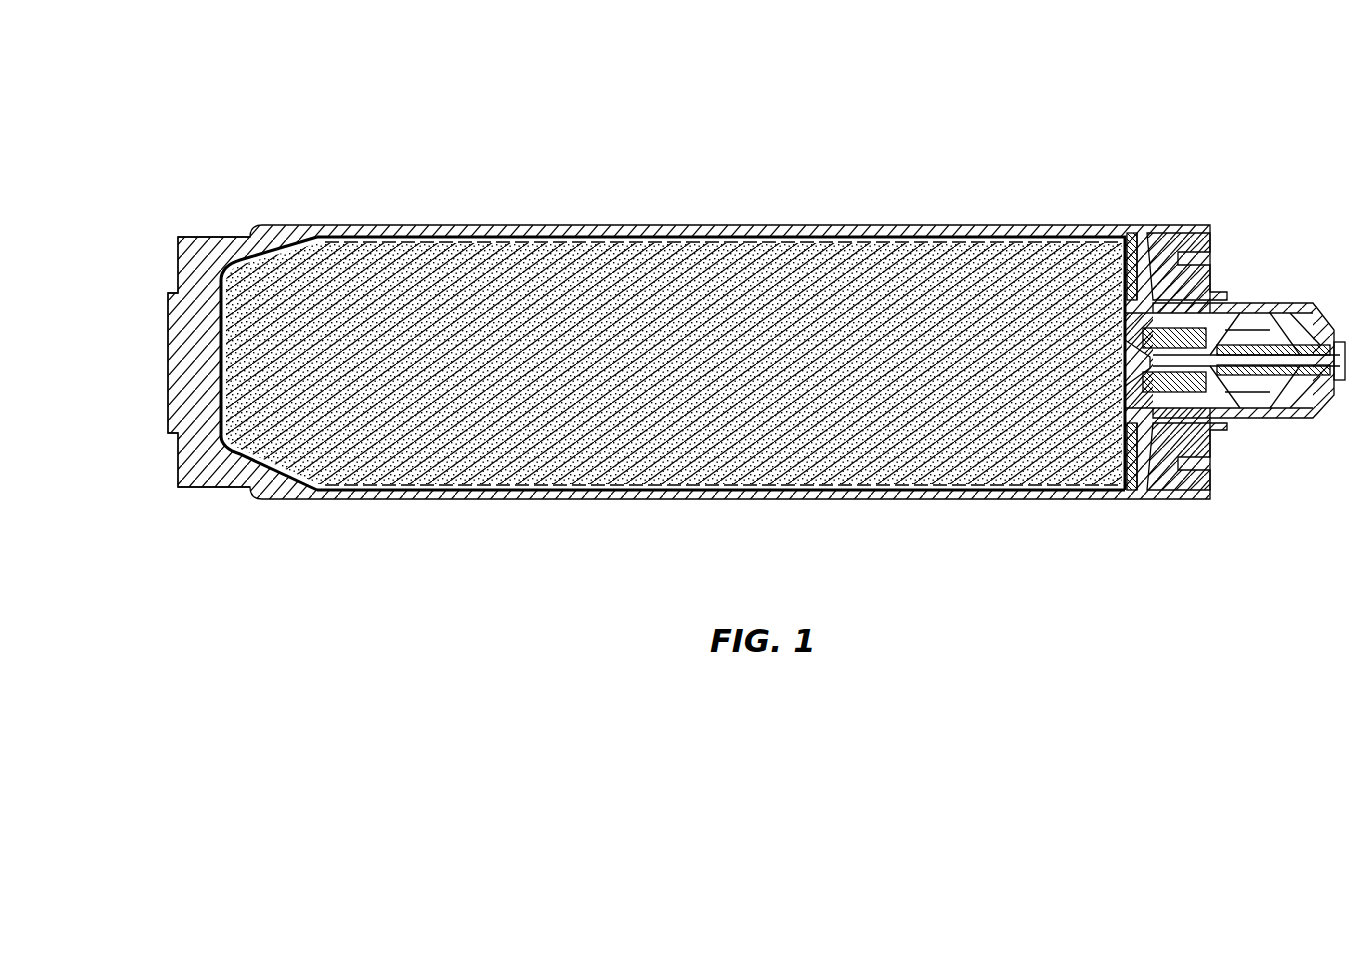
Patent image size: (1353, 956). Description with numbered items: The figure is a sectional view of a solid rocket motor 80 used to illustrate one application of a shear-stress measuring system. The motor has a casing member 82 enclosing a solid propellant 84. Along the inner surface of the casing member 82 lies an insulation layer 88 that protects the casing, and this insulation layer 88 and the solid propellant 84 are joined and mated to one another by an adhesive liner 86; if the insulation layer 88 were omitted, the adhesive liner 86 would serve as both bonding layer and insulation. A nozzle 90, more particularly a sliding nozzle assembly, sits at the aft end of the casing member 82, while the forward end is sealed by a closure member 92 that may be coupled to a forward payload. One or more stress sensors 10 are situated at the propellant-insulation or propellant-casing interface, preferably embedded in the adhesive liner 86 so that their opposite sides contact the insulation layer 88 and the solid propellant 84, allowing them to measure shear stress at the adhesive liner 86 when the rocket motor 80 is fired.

The solid rocket motor 80 is at (314, 146).
The stress sensor 10 is at (492, 226).
The casing member 82 is at (757, 225).
The solid propellant 84 is at (737, 373).
The adhesive liner 86 is at (968, 232).
The insulation layer 88 is at (866, 500).
The nozzle 90 is at (1112, 393).
The closure member 92 is at (180, 381).